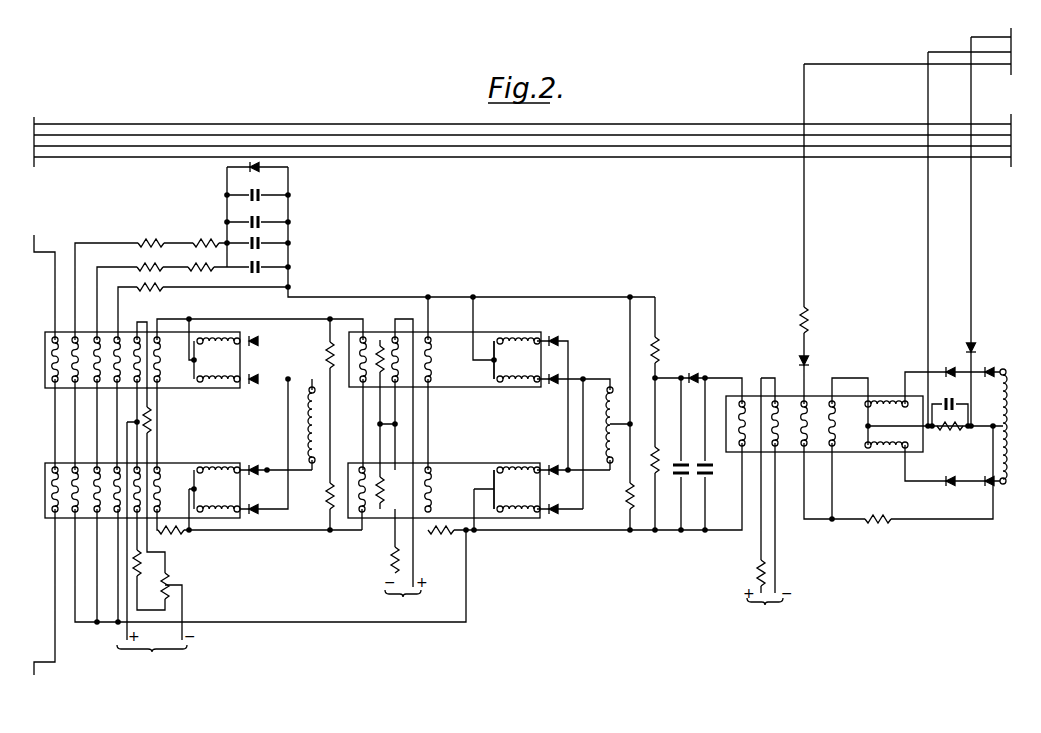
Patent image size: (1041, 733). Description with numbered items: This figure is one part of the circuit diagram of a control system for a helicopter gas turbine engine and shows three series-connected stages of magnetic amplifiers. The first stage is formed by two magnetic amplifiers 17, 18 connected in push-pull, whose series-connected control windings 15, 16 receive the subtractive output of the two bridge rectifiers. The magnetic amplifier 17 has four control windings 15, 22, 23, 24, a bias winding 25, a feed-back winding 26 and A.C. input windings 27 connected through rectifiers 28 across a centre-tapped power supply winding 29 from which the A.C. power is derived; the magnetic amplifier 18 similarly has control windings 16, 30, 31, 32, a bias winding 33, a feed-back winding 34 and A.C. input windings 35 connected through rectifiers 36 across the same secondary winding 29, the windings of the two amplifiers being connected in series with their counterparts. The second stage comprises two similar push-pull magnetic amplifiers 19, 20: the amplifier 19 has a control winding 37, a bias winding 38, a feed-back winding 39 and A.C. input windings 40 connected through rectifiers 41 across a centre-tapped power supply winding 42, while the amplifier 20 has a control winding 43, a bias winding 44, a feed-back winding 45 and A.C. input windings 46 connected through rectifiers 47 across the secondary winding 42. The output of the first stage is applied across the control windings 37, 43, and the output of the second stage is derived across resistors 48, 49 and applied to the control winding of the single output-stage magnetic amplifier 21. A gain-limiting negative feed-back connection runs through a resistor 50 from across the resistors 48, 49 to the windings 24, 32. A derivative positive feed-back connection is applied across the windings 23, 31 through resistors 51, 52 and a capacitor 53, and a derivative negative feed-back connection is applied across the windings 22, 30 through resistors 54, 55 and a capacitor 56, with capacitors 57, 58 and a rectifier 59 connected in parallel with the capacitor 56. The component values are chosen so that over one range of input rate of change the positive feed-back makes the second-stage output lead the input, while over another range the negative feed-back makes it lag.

The control winding 15 is at (47, 371).
The control winding 16 is at (47, 501).
The magnetic amplifier 17 is at (47, 345).
The magnetic amplifier 18 is at (47, 475).
The magnetic amplifier 19 is at (373, 332).
The magnetic amplifier 20 is at (347, 480).
The magnetic amplifier 21 is at (742, 396).
The control winding 22 is at (73, 338).
The control winding 23 is at (94, 338).
The control winding 24 is at (114, 338).
The bias winding 25 is at (135, 338).
The feed-back winding 26 is at (166, 357).
The A.C. input windings 27 is at (217, 360).
The rectifiers 28 is at (256, 360).
The centre-tapped power supply winding 29 is at (311, 386).
The control winding 30 is at (73, 468).
The control winding 31 is at (94, 468).
The control winding 32 is at (115, 468).
The bias winding 33 is at (141, 470).
The feed-back winding 34 is at (166, 488).
The A.C. input windings 35 is at (217, 489).
The rectifiers 36 is at (276, 446).
The control winding 37 is at (361, 382).
The bias winding 38 is at (431, 372).
The feed-back winding 39 is at (432, 352).
The A.C. input windings 40 is at (517, 360).
The rectifiers 41 is at (566, 378).
The centre-tapped power supply winding 42 is at (609, 463).
The control winding 43 is at (366, 512).
The bias winding 44 is at (415, 460).
The feed-back winding 45 is at (432, 494).
The A.C. input windings 46 is at (517, 489).
The rectifiers 47 is at (560, 489).
The resistor 48 is at (650, 358).
The resistor 49 is at (628, 497).
The resistor 50 is at (145, 290).
The resistor 51 is at (135, 266).
The resistor 52 is at (214, 269).
The capacitor 53 is at (262, 267).
The resistor 54 is at (150, 240).
The resistor 55 is at (205, 240).
The capacitor 56 is at (262, 243).
The capacitor 57 is at (262, 222).
The capacitor 58 is at (262, 195).
The rectifier 59 is at (250, 170).